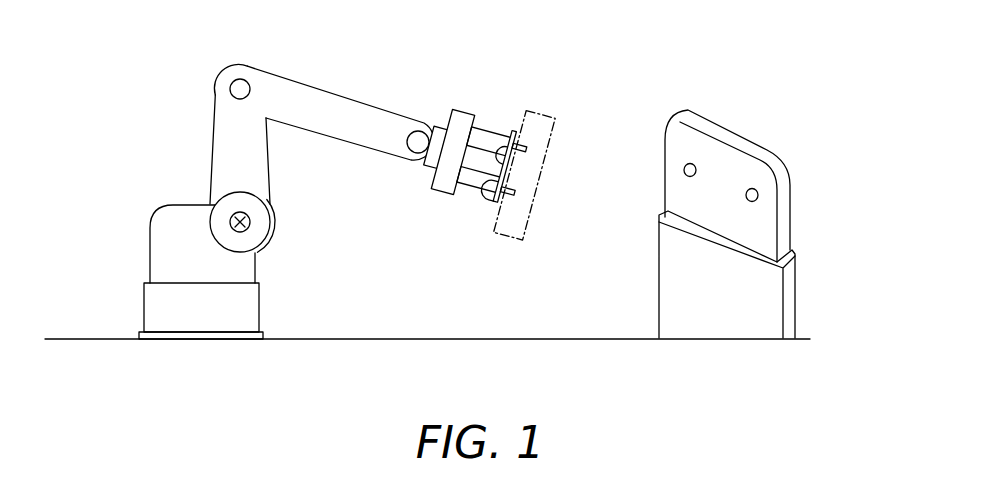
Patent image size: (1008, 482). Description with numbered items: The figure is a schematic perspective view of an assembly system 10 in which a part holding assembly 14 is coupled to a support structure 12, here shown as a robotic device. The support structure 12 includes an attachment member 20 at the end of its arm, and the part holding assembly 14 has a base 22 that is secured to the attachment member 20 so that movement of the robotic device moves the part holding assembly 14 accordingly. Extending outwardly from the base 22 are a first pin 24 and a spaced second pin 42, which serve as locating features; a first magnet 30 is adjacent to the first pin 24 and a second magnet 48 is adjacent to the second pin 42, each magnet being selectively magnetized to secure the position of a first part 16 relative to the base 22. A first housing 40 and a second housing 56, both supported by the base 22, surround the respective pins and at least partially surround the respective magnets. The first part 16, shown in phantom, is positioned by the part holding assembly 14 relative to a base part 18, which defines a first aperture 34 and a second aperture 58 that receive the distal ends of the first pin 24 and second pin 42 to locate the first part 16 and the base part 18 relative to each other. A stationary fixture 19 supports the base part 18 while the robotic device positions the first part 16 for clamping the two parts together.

The assembly system 10 is at (168, 70).
The support structure 12 is at (158, 251).
The part holding assembly 14 is at (446, 86).
The first part 16 is at (530, 108).
The base part 18 is at (740, 128).
The stationary fixture 19 is at (797, 275).
The attachment member 20 is at (430, 178).
The base 22 is at (465, 120).
The first pin 24 is at (515, 212).
The first magnet 30 is at (486, 190).
The first aperture 34 is at (758, 196).
The first housing 40 is at (472, 198).
The second pin 42 is at (527, 148).
The second magnet 48 is at (512, 163).
The second housing 56 is at (503, 128).
The second aperture 58 is at (684, 171).